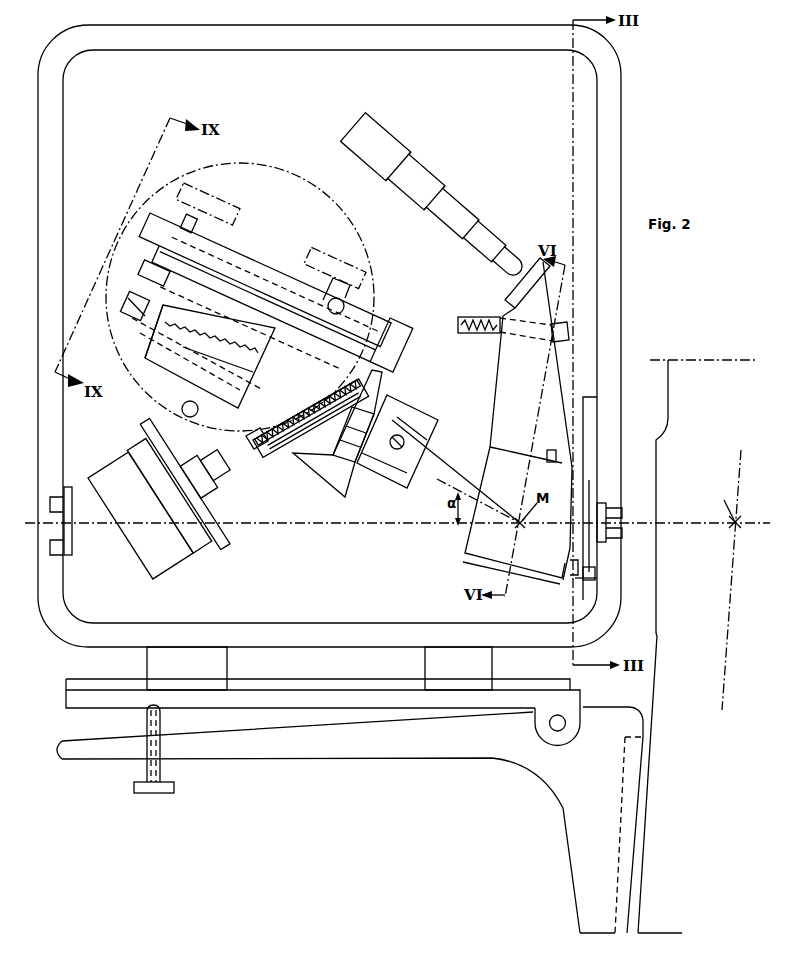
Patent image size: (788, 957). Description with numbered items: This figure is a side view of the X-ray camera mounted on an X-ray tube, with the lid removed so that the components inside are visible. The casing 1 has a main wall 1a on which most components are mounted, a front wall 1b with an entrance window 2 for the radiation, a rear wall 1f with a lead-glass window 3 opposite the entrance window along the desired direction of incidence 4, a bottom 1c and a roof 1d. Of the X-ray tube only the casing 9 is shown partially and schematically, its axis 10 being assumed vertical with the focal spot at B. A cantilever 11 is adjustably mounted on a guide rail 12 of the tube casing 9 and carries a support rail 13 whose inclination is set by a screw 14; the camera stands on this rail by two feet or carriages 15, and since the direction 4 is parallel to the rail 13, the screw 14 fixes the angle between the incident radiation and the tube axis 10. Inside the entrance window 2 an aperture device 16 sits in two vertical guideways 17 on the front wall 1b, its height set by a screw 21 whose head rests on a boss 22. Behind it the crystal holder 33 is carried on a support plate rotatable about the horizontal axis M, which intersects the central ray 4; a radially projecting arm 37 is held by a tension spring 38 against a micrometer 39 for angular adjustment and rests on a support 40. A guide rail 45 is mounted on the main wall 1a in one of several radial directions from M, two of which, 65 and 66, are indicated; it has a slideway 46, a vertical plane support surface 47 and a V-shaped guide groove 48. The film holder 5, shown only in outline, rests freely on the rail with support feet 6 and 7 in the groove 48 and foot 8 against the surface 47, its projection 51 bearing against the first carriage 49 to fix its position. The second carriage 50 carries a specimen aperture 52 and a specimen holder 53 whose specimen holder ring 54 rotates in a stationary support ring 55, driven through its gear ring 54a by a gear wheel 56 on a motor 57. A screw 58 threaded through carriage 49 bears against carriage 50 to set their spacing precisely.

The casing 1 is at (438, 104).
The main wall 1a is at (583, 172).
The front wall 1b is at (608, 295).
The bottom 1c is at (292, 636).
The roof 1d is at (282, 44).
The rear wall 1f is at (52, 440).
The entrance window 2 is at (606, 517).
The lead-glass window 3 is at (58, 527).
The direction of incidence 4 is at (397, 528).
The film holder 5 is at (299, 180).
The support foot 6 is at (184, 226).
The support foot 7 is at (340, 301).
The support foot 8 is at (190, 417).
The casing of the X-ray tube 9 is at (680, 410).
The axis of the X-ray tube 10 is at (736, 578).
The cantilever 11 is at (431, 745).
The guide rail 12 is at (643, 735).
The support rail 13 is at (306, 690).
The screw 14 is at (164, 773).
The feet or carriages 15 is at (215, 665).
The aperture device 16 is at (575, 574).
The vertical guideways 17 is at (590, 405).
The screw 21 is at (580, 586).
The boss 22 is at (589, 580).
The crystal holder 33 is at (482, 540).
The arm 37 is at (507, 382).
The tension spring 38 is at (472, 334).
The micrometer 39 is at (455, 208).
The support 40 is at (483, 316).
The guide rail 45 is at (403, 402).
The slideway 46 is at (135, 338).
The vertical plane support surface 47 is at (150, 400).
The V-shaped guide groove 48 is at (405, 340).
The carriage 49 is at (150, 378).
The carriage 50 is at (328, 470).
The projection 51 is at (152, 276).
The specimen aperture 52 is at (345, 458).
The specimen holder 53 is at (270, 468).
The specimen holder ring 54 is at (258, 449).
The gear ring 54a is at (262, 455).
The support ring 55 is at (284, 452).
The gear wheel 56 is at (252, 442).
The motor 57 is at (203, 537).
The screw 58 is at (137, 296).
The radial direction 65 is at (438, 484).
The radial direction 66 is at (454, 466).